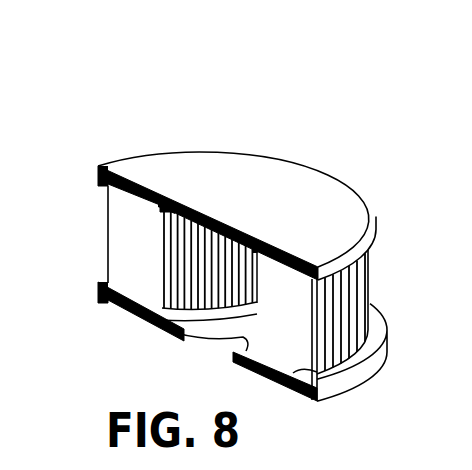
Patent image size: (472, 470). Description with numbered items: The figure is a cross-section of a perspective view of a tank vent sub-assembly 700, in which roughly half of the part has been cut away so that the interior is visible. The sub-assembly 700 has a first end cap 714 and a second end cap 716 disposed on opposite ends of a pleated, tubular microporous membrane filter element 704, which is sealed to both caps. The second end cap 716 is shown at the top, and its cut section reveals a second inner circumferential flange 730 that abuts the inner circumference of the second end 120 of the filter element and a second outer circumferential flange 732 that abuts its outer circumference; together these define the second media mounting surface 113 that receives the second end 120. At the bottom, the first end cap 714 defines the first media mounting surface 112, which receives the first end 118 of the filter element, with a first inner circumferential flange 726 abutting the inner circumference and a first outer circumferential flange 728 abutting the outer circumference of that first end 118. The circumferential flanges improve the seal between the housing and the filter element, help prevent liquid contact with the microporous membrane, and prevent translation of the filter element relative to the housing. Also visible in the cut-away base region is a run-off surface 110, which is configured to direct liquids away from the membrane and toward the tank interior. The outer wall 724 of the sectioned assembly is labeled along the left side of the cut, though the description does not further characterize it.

The tank vent sub-assembly 700 is at (224, 84).
The second end cap 716 is at (278, 180).
The second inner circumferential flange 730 is at (160, 200).
The second outer circumferential flange 732 is at (98, 175).
The outer wall 724 is at (107, 258).
The second end 120 is at (272, 250).
The second media mounting surface 113 is at (294, 266).
The first media mounting surface 112 is at (268, 363).
The filter element 704 is at (356, 282).
The run-off surface 110 is at (198, 327).
The first inner circumferential flange 726 is at (147, 325).
The first outer circumferential flange 728 is at (100, 293).
The first end cap 714 is at (346, 378).
The first end 118 is at (297, 368).